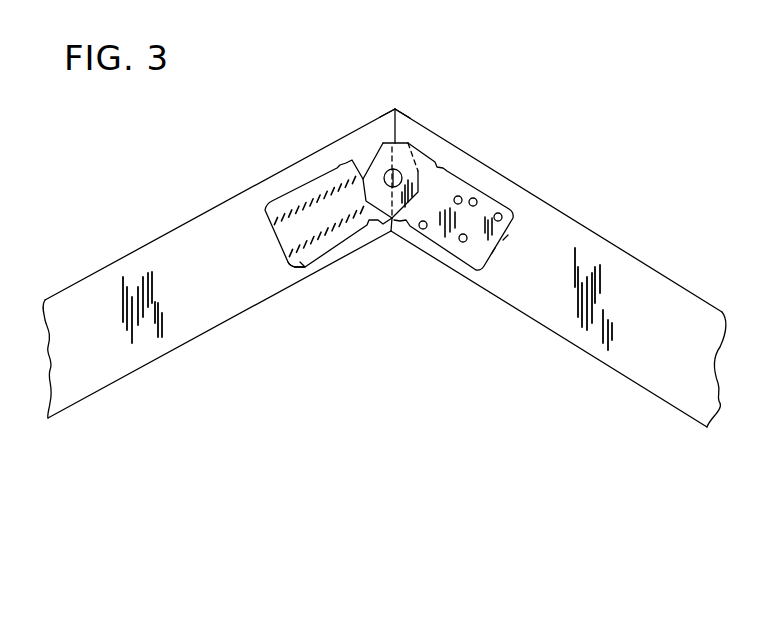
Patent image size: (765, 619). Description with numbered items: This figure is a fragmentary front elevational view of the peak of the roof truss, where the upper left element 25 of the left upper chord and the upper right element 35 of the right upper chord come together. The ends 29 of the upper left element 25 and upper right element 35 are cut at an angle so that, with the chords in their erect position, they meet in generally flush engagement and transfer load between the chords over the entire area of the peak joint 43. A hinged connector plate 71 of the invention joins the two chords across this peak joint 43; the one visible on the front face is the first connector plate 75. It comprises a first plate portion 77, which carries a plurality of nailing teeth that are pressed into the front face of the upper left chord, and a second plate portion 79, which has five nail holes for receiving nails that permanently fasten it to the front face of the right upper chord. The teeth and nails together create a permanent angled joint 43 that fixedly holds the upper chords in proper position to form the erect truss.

The upper left element 25 is at (203, 227).
The upper right element 35 is at (547, 212).
The ends of the upper left and upper right elements 29 is at (396, 112).
The peak joint 43 is at (398, 125).
The connector plate 71 is at (395, 233).
The first connector plate 75 is at (310, 263).
The first plate portion 77 is at (310, 187).
The second plate portion 79 is at (457, 183).